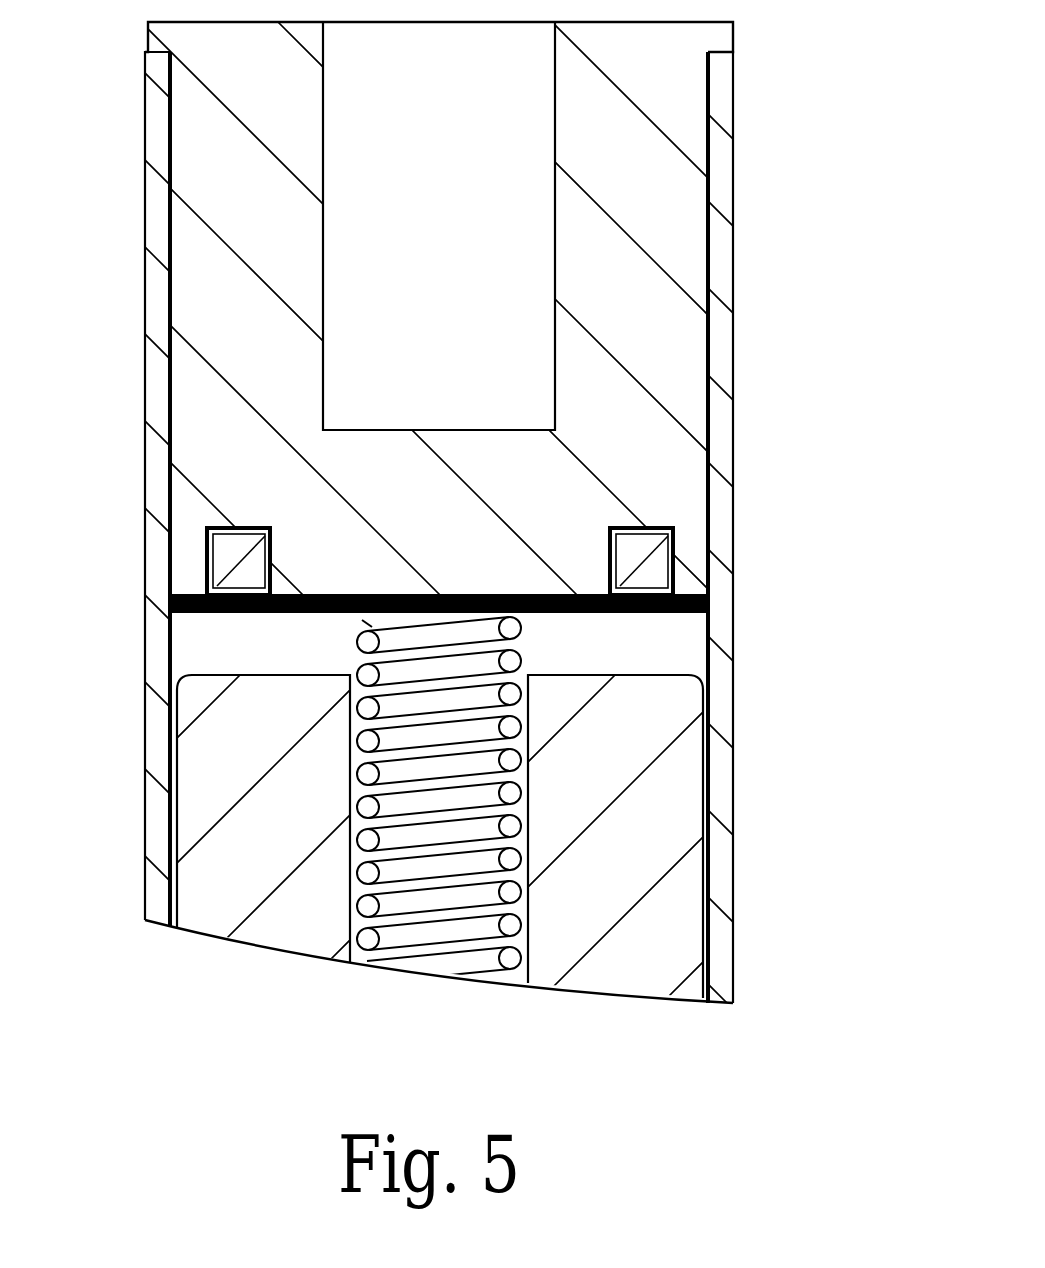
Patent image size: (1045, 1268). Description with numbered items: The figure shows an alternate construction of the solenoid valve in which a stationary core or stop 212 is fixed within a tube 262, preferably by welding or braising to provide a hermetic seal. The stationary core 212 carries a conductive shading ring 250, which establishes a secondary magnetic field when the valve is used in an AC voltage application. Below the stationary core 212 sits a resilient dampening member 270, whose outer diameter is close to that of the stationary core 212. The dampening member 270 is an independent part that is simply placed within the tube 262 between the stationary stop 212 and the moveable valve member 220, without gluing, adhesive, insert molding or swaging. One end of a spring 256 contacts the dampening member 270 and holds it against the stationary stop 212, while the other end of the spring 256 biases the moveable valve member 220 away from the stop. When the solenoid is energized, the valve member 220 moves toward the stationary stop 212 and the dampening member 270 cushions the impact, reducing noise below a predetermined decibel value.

The tube 262 is at (723, 357).
The stationary core or stop 212 is at (695, 520).
The conductive shading ring 250 is at (232, 562).
The resilient dampening member 270 is at (700, 620).
The spring 256 is at (512, 660).
The moveable valve member 220 is at (690, 870).